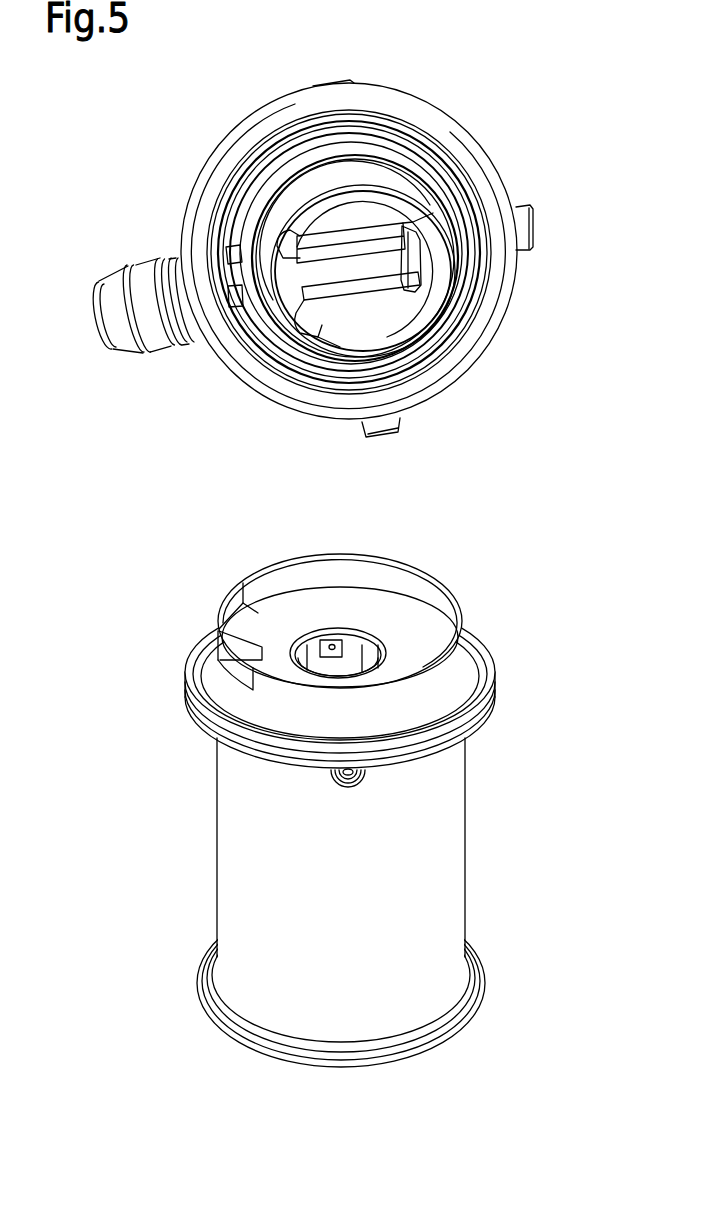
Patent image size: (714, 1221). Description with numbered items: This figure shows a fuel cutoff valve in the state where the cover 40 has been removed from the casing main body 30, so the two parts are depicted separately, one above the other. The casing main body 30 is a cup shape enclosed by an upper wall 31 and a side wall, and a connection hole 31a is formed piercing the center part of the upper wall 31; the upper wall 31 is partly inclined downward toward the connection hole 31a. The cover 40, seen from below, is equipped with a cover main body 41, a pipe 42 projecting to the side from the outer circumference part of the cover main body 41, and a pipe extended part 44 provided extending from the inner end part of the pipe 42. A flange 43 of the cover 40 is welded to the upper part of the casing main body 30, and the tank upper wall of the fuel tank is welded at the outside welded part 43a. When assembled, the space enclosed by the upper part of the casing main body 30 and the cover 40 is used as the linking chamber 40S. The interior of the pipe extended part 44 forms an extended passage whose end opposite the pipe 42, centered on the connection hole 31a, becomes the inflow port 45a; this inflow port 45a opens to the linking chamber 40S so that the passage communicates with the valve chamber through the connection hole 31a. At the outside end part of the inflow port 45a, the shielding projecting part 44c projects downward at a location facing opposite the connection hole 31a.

The cover 40 is at (443, 112).
The linking chamber 40S is at (325, 186).
The cover main body 41 is at (288, 353).
The pipe 42 is at (118, 330).
The flange 43 is at (300, 402).
The outside welded part 43a is at (343, 405).
The pipe extended part 44 is at (310, 267).
The shielding projecting part 44c is at (413, 235).
The inflow port 45a is at (415, 262).
The casing main body 30 is at (466, 828).
The upper wall 31 is at (417, 647).
The connection hole 31a is at (358, 640).